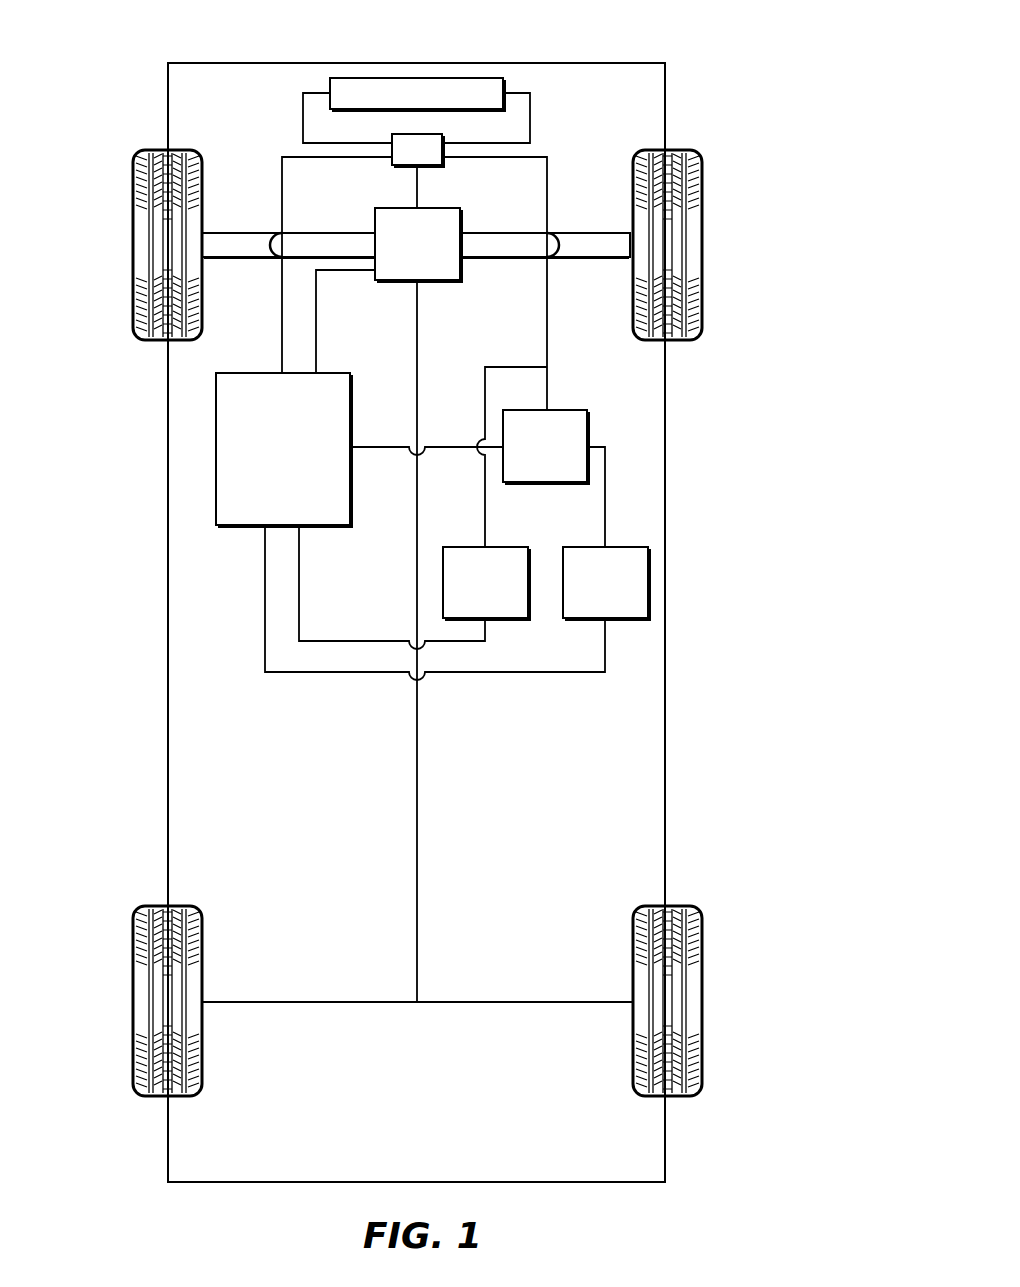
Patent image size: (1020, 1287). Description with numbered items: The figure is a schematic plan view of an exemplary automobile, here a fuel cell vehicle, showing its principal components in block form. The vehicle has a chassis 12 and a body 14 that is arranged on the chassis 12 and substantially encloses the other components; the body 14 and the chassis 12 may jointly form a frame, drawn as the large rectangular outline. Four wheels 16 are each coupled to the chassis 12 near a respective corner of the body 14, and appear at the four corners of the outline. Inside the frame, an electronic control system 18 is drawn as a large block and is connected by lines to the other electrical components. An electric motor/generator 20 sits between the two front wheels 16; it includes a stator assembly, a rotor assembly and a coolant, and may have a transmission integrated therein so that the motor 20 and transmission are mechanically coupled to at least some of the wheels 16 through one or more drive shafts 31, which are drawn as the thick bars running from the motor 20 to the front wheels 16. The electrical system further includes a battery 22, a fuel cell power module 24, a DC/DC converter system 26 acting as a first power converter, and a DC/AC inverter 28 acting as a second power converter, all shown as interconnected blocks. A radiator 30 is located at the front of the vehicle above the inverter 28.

The chassis 12 is at (417, 873).
The body 14 is at (182, 449).
The wheels 16 is at (134, 212).
The electronic control system 18 is at (284, 450).
The electric motor/generator 20 is at (418, 245).
The battery 22 is at (606, 583).
The fuel cell power module 24 is at (486, 583).
The DC/DC converter system 26 is at (546, 447).
The DC/AC inverter 28 is at (418, 150).
The radiator 30 is at (366, 78).
The drive shafts 31 is at (263, 233).